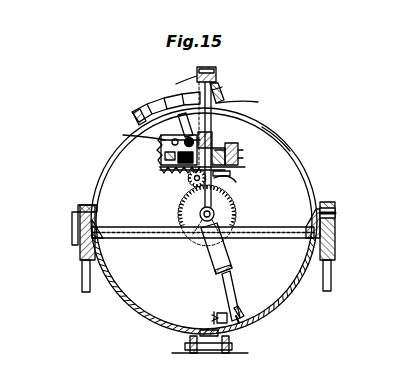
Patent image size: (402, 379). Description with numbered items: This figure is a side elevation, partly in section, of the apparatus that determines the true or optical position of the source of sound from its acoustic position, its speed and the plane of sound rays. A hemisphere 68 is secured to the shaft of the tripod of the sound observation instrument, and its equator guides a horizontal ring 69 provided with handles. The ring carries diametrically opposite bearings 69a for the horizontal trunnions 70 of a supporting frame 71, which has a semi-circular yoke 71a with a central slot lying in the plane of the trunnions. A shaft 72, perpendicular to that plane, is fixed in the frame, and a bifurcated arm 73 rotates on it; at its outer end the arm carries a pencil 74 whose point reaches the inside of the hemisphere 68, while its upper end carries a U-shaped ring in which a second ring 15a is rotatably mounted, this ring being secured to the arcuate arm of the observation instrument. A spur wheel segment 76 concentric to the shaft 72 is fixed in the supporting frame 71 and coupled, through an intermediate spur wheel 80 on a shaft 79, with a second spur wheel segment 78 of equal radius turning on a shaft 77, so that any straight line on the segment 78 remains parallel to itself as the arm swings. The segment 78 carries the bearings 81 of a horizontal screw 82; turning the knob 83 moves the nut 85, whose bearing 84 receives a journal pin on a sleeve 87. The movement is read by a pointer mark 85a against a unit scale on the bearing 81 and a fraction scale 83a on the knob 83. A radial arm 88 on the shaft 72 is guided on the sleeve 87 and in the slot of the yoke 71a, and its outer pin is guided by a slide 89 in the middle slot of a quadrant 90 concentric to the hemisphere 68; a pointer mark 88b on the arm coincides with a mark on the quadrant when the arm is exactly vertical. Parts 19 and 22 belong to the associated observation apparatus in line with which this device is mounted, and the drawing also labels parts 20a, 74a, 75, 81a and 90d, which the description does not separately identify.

The ring 15a is at (134, 118).
The plate 19 is at (148, 239).
The support rod 20a is at (82, 260).
The side plate 22 is at (76, 231).
The hemisphere 68 is at (172, 326).
The horizontal ring 69 is at (328, 202).
The bearings 69a is at (90, 205).
The horizontal trunnions 70 is at (336, 213).
The supporting frame 71 is at (310, 232).
The semi-circular yoke 71a is at (285, 146).
The shaft 72 is at (217, 212).
The bifurcated arm 73 is at (210, 256).
The pencil 74 is at (234, 297).
The rod foot 74a is at (214, 328).
The segmented arc band 75 is at (158, 108).
The spur wheel segment 76 is at (194, 201).
The shaft 77 is at (132, 134).
The spur wheel segment 78 is at (160, 151).
The shaft 79 is at (191, 183).
The intermediate spur wheel 80 is at (226, 192).
The bearings 81 is at (170, 159).
The guide bar 81a is at (182, 173).
The horizontal screw 82 is at (168, 171).
The knob 83 is at (239, 152).
The fraction scale 83a is at (242, 160).
The bearing 84 is at (214, 139).
The nut 85 is at (224, 173).
The pointer mark 85a is at (222, 150).
The sleeve 87 is at (189, 125).
The radial arm 88 is at (277, 113).
The pointer mark 88b is at (215, 70).
The slide 89 is at (199, 70).
The quadrant 90 is at (222, 92).
The inclined member end 90d is at (216, 80).